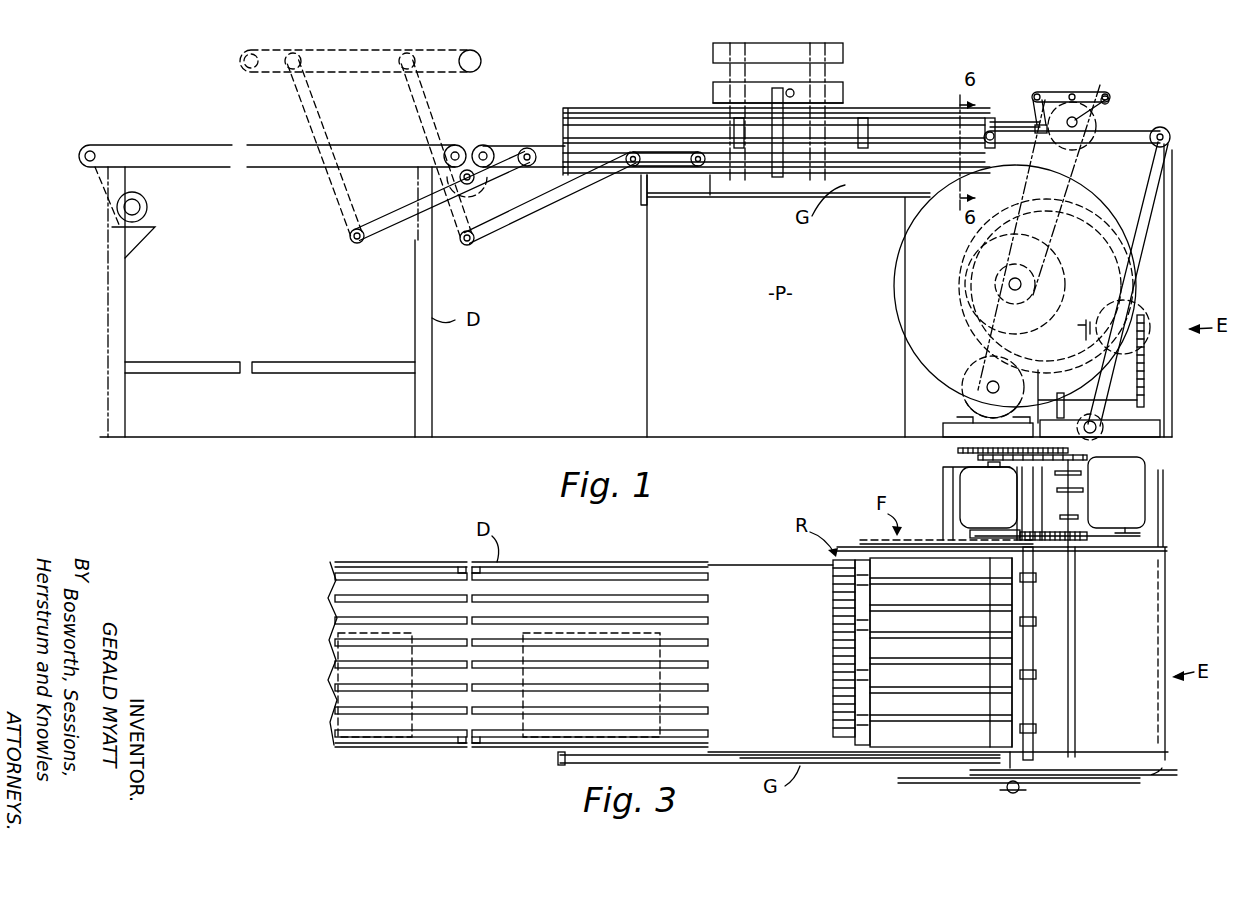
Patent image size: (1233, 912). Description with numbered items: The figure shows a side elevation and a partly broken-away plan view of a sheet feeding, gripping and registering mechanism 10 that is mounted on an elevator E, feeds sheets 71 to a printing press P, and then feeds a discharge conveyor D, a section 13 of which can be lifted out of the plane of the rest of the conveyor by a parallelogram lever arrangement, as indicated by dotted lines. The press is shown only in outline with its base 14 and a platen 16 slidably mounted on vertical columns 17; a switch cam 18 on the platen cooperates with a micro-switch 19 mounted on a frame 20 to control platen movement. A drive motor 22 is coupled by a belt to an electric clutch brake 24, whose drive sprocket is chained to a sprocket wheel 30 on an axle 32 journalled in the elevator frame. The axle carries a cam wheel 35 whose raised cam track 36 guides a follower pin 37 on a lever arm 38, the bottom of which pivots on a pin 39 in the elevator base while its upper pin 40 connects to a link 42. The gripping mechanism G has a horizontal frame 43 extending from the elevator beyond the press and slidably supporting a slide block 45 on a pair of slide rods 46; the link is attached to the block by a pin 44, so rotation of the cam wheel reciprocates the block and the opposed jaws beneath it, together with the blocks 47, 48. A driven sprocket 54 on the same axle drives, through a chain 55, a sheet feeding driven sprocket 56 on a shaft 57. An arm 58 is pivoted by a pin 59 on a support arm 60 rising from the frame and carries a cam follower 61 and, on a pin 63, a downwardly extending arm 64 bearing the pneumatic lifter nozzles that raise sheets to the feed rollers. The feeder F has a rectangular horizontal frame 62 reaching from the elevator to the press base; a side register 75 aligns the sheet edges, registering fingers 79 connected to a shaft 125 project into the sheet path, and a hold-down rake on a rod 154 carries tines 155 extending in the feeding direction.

In FIG. 1, the feeding, gripping and registering mechanism 10 is at (1220, 215).
In FIG. 1, the section of the discharge conveyor apparatus 13 is at (380, 46).
In FIG. 1, the base 14 is at (778, 92).
In FIG. 1, the platen 16 is at (843, 96).
In FIG. 1, the vertical columns 17 is at (713, 75).
In FIG. 1, the switch cam 18 is at (790, 89).
In FIG. 1, the micro-switch 19 is at (789, 97).
In FIG. 1, the frame 20 is at (780, 182).
In FIG. 1, the drive motor 22 is at (1150, 306).
In FIG. 1, the electric clutch brake 24 is at (963, 398).
In FIG. 1, the sprocket wheel 30 is at (968, 334).
In FIG. 1, the axle 32 is at (1009, 284).
In FIG. 3, the axle 32 is at (1015, 794).
In FIG. 1, the cam wheel 35 is at (912, 275).
In FIG. 3, the cam wheel 35 is at (935, 784).
In FIG. 1, the raised cam track 36 is at (985, 243).
In FIG. 3, the raised cam track 36 is at (1135, 784).
In FIG. 1, the follower pin 37 is at (1174, 264).
In FIG. 1, the lever arm 38 is at (1163, 175).
In FIG. 1, the pin 39 is at (1105, 432).
In FIG. 1, the pin 40 is at (1168, 135).
In FIG. 1, the link 42 is at (1160, 131).
In FIG. 1, the horizontal frame 43 is at (566, 108).
In FIG. 3, the horizontal frame 43 is at (575, 763).
In FIG. 1, the pin 44 is at (1010, 130).
In FIG. 1, the slide block 45 is at (990, 120).
In FIG. 1, the slide rods 46 is at (905, 140).
In FIG. 1, the block 47 is at (864, 120).
In FIG. 1, the block 48 is at (735, 128).
In FIG. 1, the driven sprocket 54 is at (1046, 274).
In FIG. 1, the chain 55 is at (1085, 140).
In FIG. 1, the sheet feeding driven sprocket 56 is at (1093, 100).
In FIG. 3, the sheet feeding driven sprocket 56 is at (1087, 465).
In FIG. 1, the shaft 57 is at (1078, 122).
In FIG. 3, the shaft 57 is at (1078, 673).
In FIG. 1, the arm 58 is at (1042, 95).
In FIG. 1, the pin 59 is at (1110, 100).
In FIG. 1, the support arm 60 is at (1108, 103).
In FIG. 1, the cam follower 61 is at (1074, 95).
In FIG. 3, the frame 62 is at (890, 555).
In FIG. 1, the pin 63 is at (1040, 105).
In FIG. 1, the arm 64 is at (1030, 150).
In FIG. 3, the sheets 71 is at (412, 737).
In FIG. 3, the side register 75 is at (972, 634).
In FIG. 3, the registering fingers 79 is at (842, 633).
In FIG. 3, the shaft 125 is at (874, 567).
In FIG. 3, the rod 154 is at (833, 585).
In FIG. 3, the fingers or tines 155 is at (842, 706).